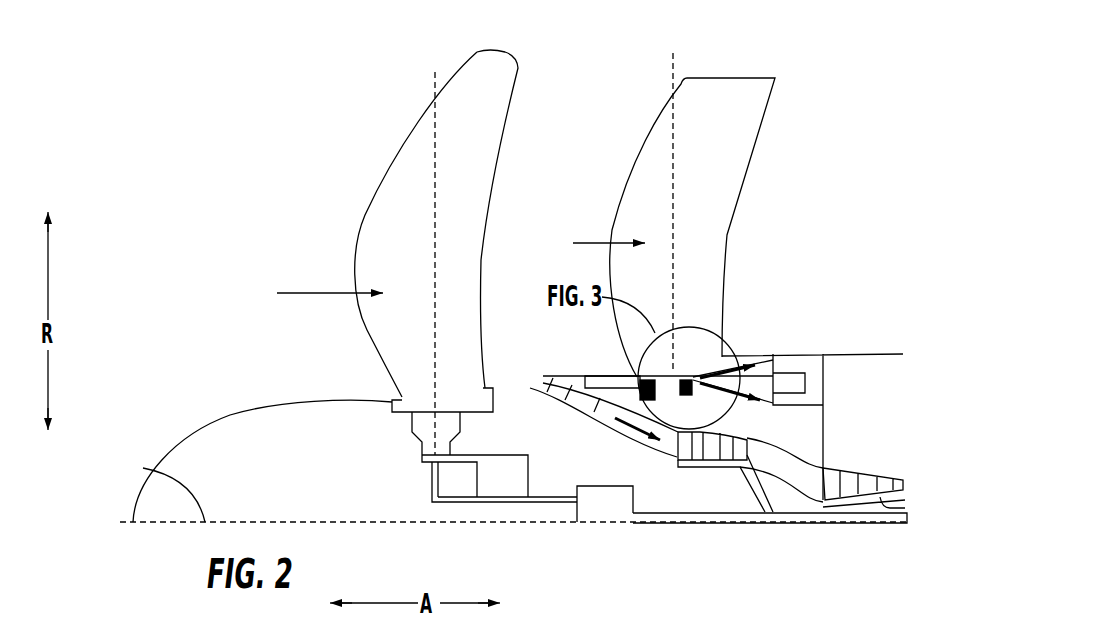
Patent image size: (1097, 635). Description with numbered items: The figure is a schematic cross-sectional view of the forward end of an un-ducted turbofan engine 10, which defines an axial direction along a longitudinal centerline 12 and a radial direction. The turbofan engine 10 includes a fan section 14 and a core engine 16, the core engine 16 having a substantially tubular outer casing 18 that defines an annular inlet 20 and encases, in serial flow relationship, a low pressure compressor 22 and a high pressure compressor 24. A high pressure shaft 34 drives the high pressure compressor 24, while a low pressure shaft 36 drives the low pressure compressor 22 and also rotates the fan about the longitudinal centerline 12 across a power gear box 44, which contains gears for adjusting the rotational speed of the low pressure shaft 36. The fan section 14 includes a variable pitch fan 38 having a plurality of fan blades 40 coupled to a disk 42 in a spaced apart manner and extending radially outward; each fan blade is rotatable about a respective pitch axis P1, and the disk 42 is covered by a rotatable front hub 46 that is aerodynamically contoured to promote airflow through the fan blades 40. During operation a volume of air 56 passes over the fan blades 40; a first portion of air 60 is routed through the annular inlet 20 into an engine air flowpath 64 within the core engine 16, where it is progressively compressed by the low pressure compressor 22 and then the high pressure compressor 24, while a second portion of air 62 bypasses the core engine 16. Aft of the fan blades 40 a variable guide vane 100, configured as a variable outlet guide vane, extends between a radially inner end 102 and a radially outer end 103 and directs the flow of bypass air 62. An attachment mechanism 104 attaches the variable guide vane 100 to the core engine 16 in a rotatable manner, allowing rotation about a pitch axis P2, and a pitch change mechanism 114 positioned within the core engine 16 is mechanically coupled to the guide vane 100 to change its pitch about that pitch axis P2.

The turbofan engine 10 is at (145, 246).
The longitudinal centerline 12 is at (143, 468).
The fan section 14 is at (238, 305).
The core engine 16 is at (875, 352).
The outer casing 18 is at (893, 354).
The annular inlet 20 is at (543, 380).
The low pressure compressor 22 is at (703, 478).
The high pressure compressor 24 is at (868, 502).
The high pressure shaft 34 is at (903, 510).
The low pressure shaft 36 is at (750, 515).
The variable pitch fan 38 is at (332, 258).
The fan blades 40 is at (380, 215).
The disk 42 is at (390, 402).
The power gear box 44 is at (598, 512).
The rotatable front hub 46 is at (193, 425).
The volume of air 56 is at (313, 292).
The first portion of air 60 is at (640, 437).
The second portion of air 62 is at (610, 237).
The engine air flowpath 64 is at (785, 455).
The variable guide vane 100 is at (637, 160).
The radially inner end 102 is at (697, 348).
The radially outer end 103 is at (775, 72).
The attachment mechanism 104 is at (742, 362).
The pitch change mechanism 114 is at (515, 488).
The pitch axis of fan blade P1 is at (435, 140).
The pitch axis of guide vane P2 is at (673, 128).